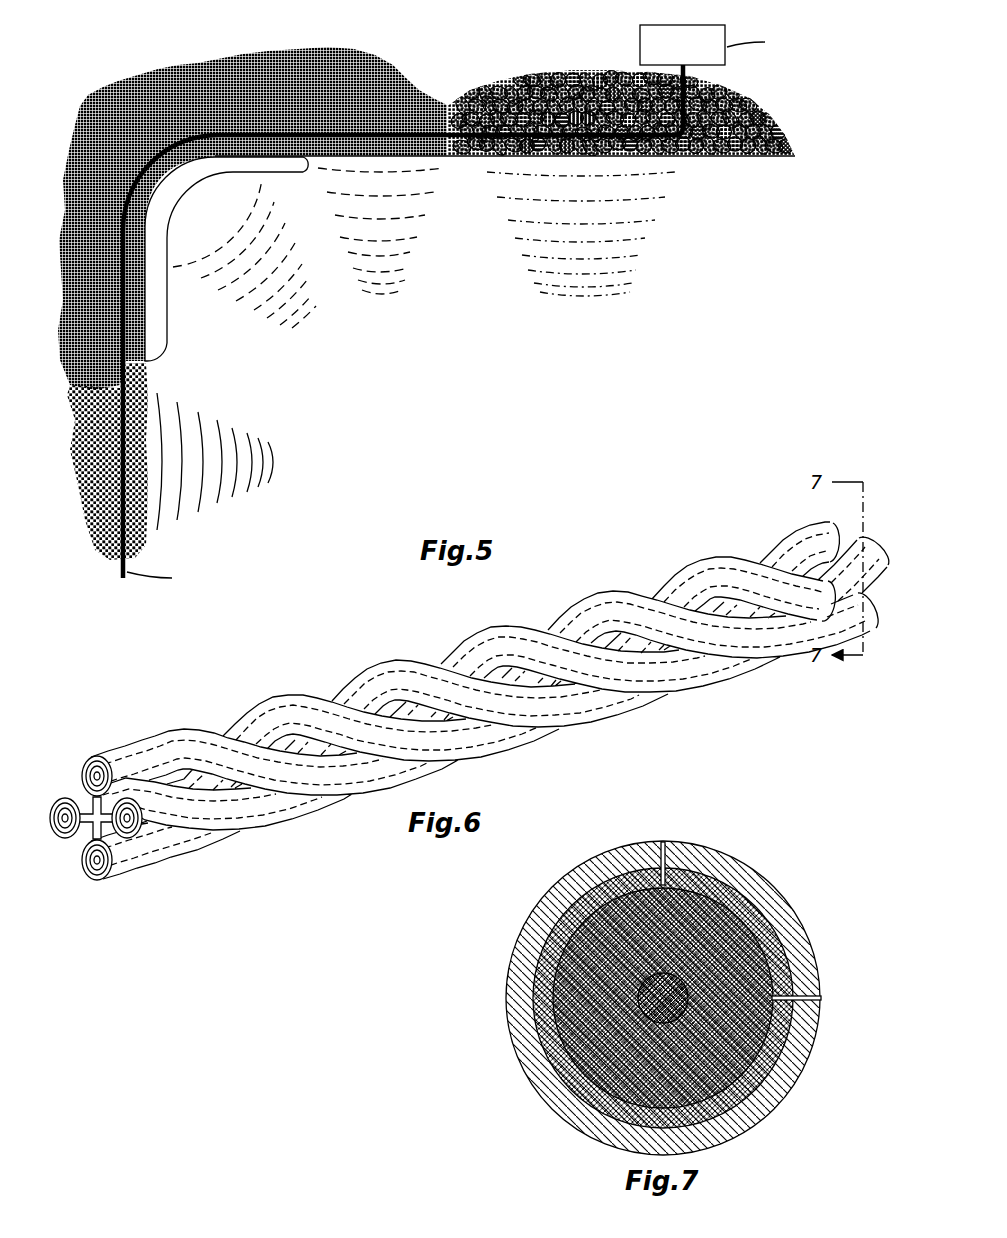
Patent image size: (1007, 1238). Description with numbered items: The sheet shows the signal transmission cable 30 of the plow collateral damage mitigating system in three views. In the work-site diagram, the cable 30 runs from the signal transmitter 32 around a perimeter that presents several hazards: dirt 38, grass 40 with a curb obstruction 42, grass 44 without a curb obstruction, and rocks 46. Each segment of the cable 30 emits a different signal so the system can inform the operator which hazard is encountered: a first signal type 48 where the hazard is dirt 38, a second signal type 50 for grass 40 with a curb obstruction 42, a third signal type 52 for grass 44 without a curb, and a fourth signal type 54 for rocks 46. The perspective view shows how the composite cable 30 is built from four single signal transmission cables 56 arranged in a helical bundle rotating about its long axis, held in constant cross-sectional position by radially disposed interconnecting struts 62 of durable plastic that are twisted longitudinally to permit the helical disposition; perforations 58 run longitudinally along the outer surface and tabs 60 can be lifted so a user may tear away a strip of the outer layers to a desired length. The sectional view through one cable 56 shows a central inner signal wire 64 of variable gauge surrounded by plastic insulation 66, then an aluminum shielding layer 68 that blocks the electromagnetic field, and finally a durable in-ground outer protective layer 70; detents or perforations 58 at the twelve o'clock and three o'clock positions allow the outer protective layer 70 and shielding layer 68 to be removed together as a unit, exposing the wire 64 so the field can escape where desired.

In FIG. 5, the signal transmission cable 30 is at (430, 135).
In FIG. 6, the signal transmission cable 30 is at (238, 902).
In FIG. 5, the signal transmitter 32 is at (640, 47).
In FIG. 5, the dirt 38 is at (92, 487).
In FIG. 5, the grass with a curb obstruction 40 is at (244, 207).
In FIG. 5, the curb obstruction 42 is at (168, 318).
In FIG. 5, the grass without a curb obstruction 44 is at (306, 82).
In FIG. 5, the rocks 46 is at (745, 112).
In FIG. 5, the first signal type 48 is at (220, 455).
In FIG. 5, the second signal type 50 is at (243, 273).
In FIG. 5, the third signal type 52 is at (415, 243).
In FIG. 5, the fourth signal type 54 is at (620, 245).
In FIG. 6, the single signal transmission cable 56 is at (469, 729).
In FIG. 7, the single signal transmission cable 56 is at (658, 990).
In FIG. 6, the perforations 58 is at (397, 717).
In FIG. 7, the perforations 58 is at (664, 845).
In FIG. 6, the tabs 60 is at (469, 729).
In FIG. 6, the interconnecting struts 62 is at (97, 823).
In FIG. 7, the inner signal wire 64 is at (660, 998).
In FIG. 7, the intermediate insulation layer 66 is at (706, 1070).
In FIG. 7, the shielding layer 68 is at (548, 1030).
In FIG. 7, the outer protective layer 70 is at (793, 926).